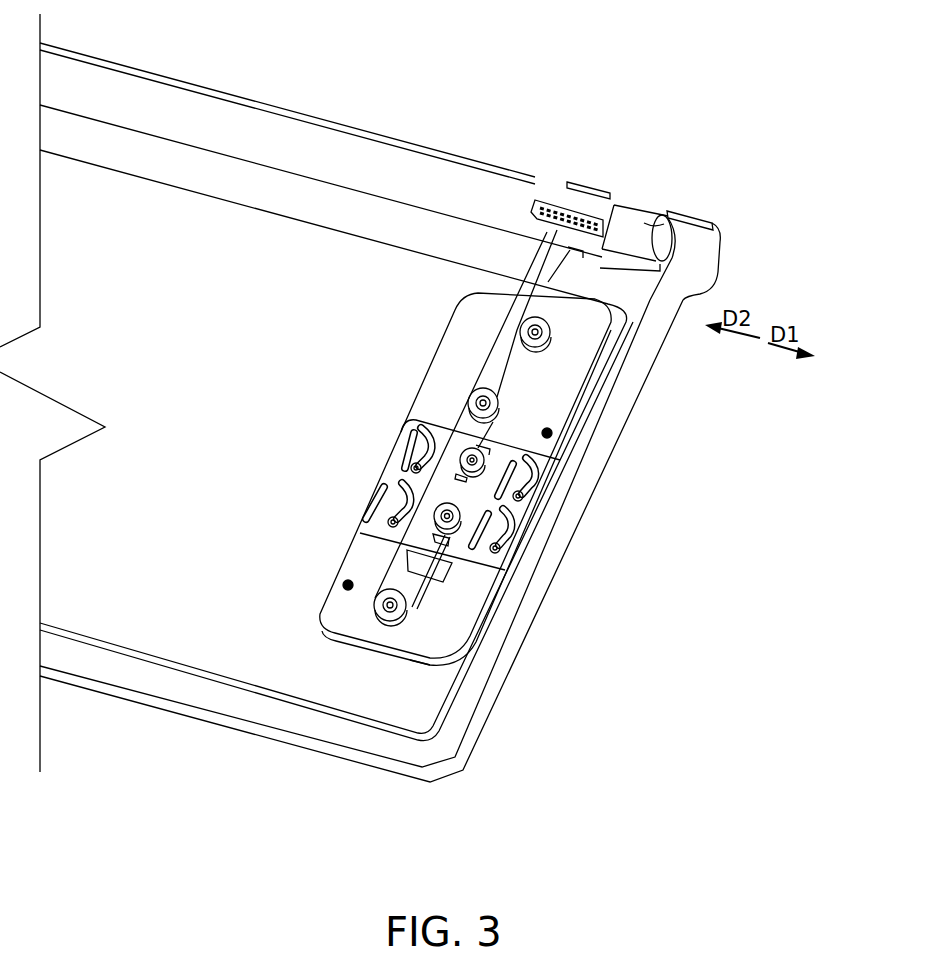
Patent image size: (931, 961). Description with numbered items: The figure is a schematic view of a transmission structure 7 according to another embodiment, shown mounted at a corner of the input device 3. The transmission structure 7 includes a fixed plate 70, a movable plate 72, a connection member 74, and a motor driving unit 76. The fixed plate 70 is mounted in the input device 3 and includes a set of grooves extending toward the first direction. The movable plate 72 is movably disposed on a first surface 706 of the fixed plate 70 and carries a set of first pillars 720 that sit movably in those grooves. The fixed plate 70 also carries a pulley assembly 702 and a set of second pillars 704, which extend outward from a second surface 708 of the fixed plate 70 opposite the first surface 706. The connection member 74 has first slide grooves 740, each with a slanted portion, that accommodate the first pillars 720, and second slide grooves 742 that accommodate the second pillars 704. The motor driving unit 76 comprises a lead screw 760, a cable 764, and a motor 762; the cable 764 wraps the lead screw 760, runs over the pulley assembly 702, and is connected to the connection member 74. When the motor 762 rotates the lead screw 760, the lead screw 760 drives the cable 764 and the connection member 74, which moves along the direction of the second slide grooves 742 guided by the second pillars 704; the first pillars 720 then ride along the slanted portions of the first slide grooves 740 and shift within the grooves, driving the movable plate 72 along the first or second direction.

The input device 3 is at (108, 695).
The transmission structure 7 is at (536, 92).
The fixed plate 70 is at (445, 367).
The movable plate 72 is at (567, 460).
The connection member 74 is at (517, 513).
The motor driving unit 76 is at (636, 206).
The pulley assembly 702 is at (377, 601).
The second pillars 704 is at (370, 520).
The first surface 706 is at (430, 664).
The second surface 708 is at (410, 637).
The first pillars 720 is at (497, 553).
The first slide grooves 740 is at (508, 528).
The second slide grooves 742 is at (382, 490).
The lead screw 760 is at (556, 205).
The motor 762 is at (670, 212).
The cable 764 is at (540, 264).